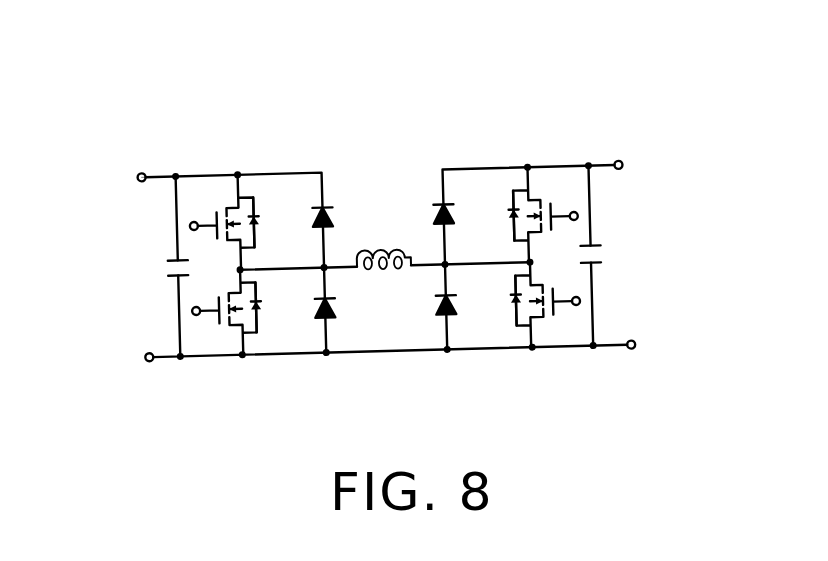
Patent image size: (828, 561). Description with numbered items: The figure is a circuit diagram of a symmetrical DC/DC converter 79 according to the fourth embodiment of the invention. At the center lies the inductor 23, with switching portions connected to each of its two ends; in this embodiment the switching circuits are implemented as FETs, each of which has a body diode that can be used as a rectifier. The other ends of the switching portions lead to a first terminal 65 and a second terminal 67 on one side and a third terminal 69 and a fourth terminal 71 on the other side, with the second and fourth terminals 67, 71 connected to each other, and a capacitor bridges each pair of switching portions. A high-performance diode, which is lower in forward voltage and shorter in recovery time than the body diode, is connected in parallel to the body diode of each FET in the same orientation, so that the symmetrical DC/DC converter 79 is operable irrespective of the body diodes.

The inductor 23 is at (383, 283).
The first terminal 65 is at (140, 171).
The second terminal 67 is at (143, 351).
The third terminal 69 is at (625, 171).
The fourth terminal 71 is at (633, 351).
The symmetrical DC/DC converter 79 is at (381, 118).